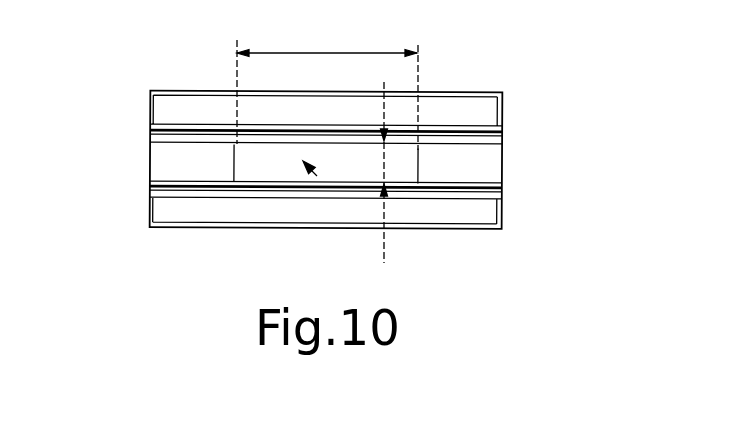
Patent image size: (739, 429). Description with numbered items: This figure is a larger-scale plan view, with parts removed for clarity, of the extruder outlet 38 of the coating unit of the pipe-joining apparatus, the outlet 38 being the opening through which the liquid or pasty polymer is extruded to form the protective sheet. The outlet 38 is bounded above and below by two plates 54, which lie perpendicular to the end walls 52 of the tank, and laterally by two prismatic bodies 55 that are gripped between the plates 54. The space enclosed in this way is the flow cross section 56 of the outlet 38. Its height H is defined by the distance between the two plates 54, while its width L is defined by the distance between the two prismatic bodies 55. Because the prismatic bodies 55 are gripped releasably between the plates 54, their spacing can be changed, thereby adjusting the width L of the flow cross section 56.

The outlet 38 is at (430, 122).
The end walls 52 is at (179, 103).
The plates 54 is at (493, 141).
The prismatic bodies 55 is at (187, 161).
The flow cross section 56 is at (317, 176).
The width of flow cross section L is at (317, 53).
The height of flow cross section H is at (385, 170).